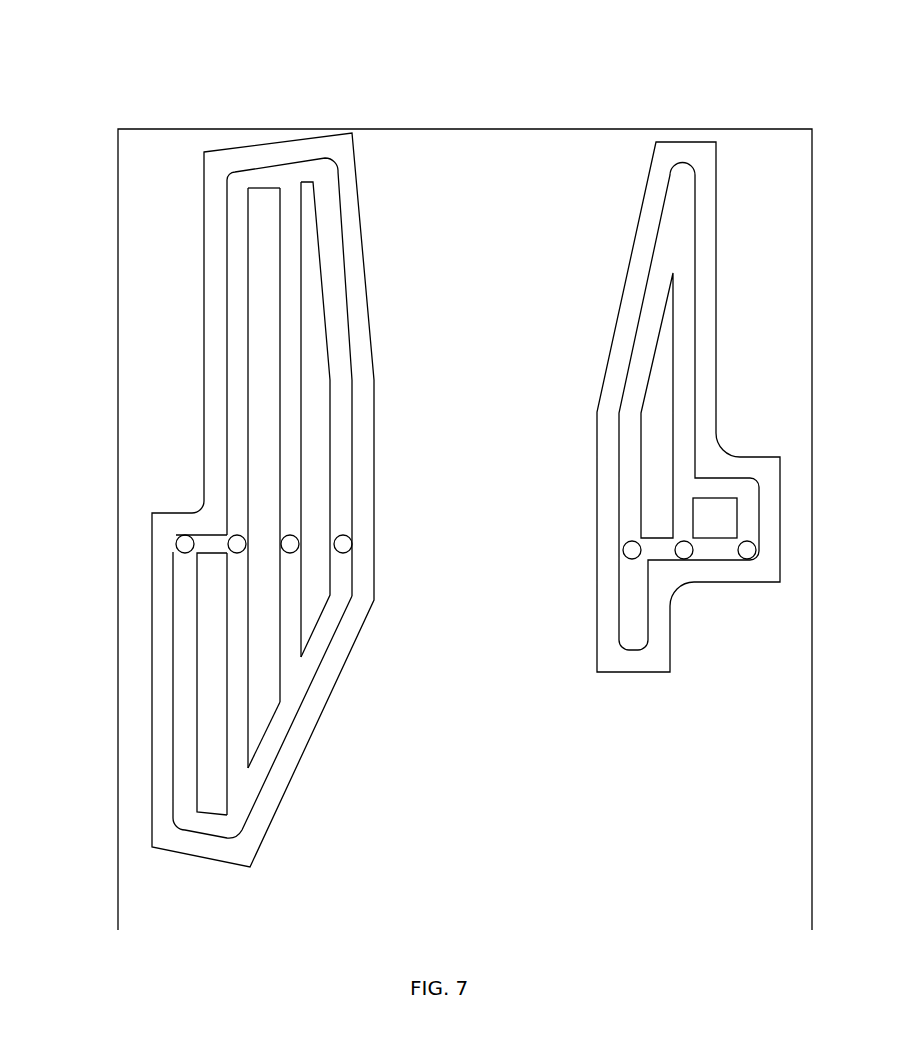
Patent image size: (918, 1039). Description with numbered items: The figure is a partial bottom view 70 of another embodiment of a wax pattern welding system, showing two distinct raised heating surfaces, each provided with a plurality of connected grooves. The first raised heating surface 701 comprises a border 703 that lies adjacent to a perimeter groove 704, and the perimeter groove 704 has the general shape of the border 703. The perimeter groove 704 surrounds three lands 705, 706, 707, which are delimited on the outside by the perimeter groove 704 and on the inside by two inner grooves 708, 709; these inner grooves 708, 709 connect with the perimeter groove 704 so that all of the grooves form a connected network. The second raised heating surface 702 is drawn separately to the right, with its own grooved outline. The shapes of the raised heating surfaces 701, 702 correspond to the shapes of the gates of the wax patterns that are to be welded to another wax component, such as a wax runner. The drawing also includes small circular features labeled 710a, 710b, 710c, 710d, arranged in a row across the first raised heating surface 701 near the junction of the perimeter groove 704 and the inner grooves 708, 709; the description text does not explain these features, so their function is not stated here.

The partial bottom view 70 is at (695, 130).
The raised heating surface 701 is at (356, 163).
The raised heating surface 702 is at (717, 205).
The border 703 is at (343, 219).
The perimeter groove 704 is at (330, 308).
The land 705 is at (313, 478).
The land 706 is at (263, 688).
The land 707 is at (212, 683).
The inner groove 708 is at (288, 410).
The inner groove 709 is at (238, 608).
The connection point 710a is at (345, 546).
The connection point 710b is at (292, 543).
The connection point 710c is at (236, 543).
The connection point 710d is at (184, 545).